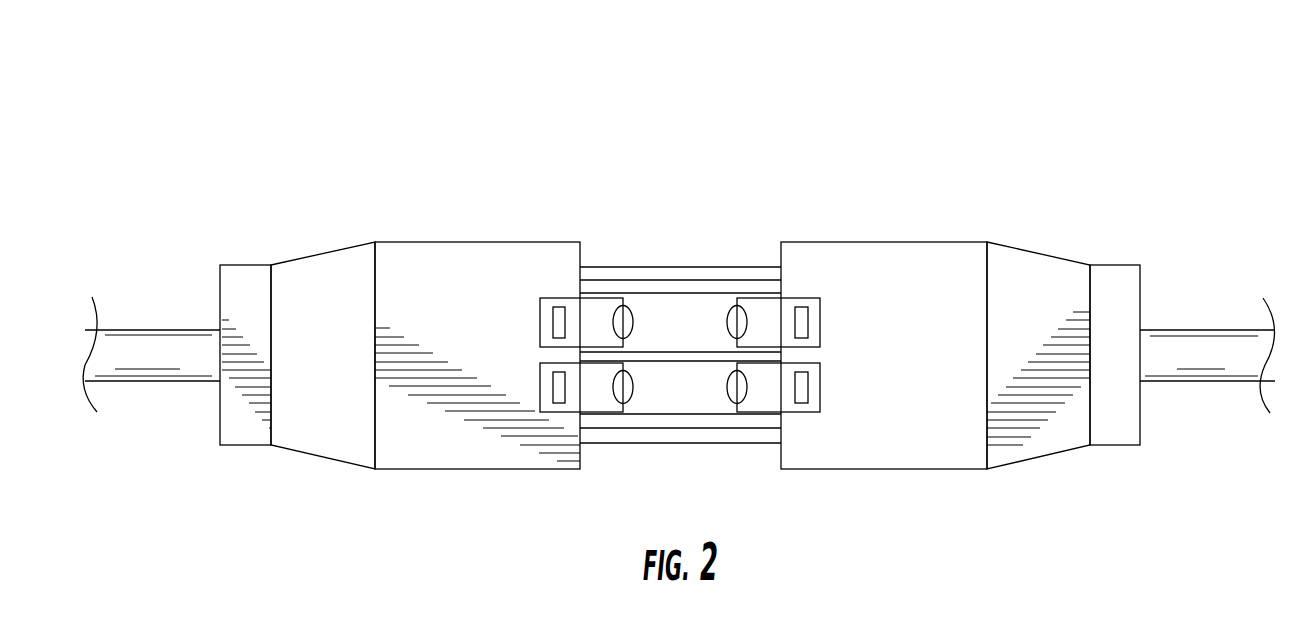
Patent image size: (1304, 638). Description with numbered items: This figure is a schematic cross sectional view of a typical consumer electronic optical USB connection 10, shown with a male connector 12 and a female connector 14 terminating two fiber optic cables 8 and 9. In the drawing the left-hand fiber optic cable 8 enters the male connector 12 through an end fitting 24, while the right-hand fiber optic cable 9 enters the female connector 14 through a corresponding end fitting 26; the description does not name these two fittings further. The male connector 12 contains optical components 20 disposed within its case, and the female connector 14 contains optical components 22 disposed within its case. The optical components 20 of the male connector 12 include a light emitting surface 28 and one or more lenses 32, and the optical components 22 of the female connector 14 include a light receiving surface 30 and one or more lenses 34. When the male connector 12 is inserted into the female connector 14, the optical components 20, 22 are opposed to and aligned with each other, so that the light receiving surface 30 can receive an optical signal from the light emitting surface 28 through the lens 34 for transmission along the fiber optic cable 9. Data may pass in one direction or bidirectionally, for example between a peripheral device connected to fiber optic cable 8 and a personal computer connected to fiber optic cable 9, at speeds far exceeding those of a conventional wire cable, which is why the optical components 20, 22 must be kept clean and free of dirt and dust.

The fiber optic cable 8 is at (142, 338).
The fiber optic cable 9 is at (1193, 345).
The optical USB connection 10 is at (480, 100).
The male connector 12 is at (342, 172).
The female connector 14 is at (991, 164).
The optical components 20 is at (588, 321).
The optical components 22 is at (767, 316).
The first strain relief 24 is at (239, 302).
The second strain relief 26 is at (1122, 297).
The light emitting surface 28 is at (555, 387).
The light receiving surface 30 is at (802, 383).
The lenses 32 is at (620, 388).
The lenses 34 is at (738, 330).